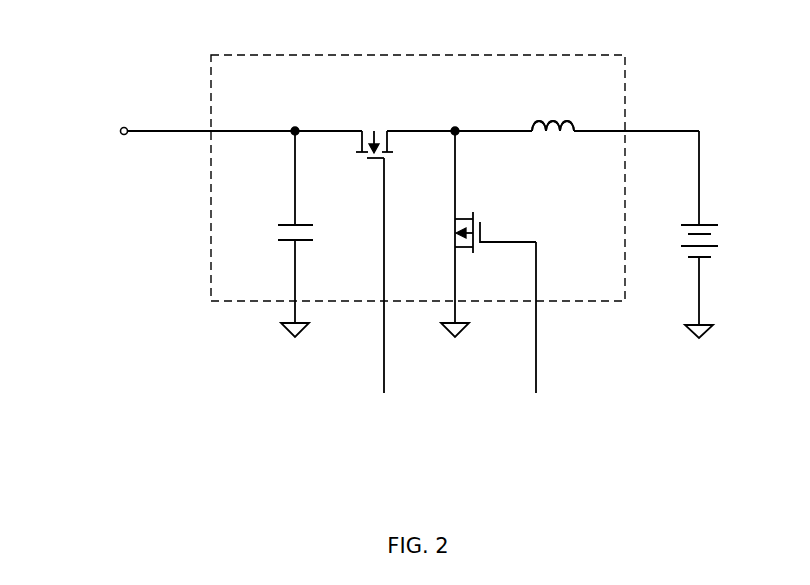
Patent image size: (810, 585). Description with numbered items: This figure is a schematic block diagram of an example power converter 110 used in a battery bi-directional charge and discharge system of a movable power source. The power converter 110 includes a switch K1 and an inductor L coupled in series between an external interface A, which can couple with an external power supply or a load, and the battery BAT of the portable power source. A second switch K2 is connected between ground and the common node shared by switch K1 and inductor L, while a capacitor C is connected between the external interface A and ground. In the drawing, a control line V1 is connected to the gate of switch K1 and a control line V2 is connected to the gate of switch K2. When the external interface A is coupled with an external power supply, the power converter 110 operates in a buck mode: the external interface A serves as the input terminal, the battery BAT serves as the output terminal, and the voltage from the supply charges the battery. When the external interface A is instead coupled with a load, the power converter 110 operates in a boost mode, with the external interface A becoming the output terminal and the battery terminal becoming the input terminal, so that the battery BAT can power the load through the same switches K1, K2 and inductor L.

The power converter 110 is at (252, 89).
The external interface A is at (237, 118).
The switch K1 is at (405, 243).
The switch K2 is at (488, 262).
The capacitor C is at (281, 234).
The inductor L is at (577, 105).
The battery BAT is at (730, 234).
The first control signal V1 is at (386, 427).
The second control signal V2 is at (537, 427).